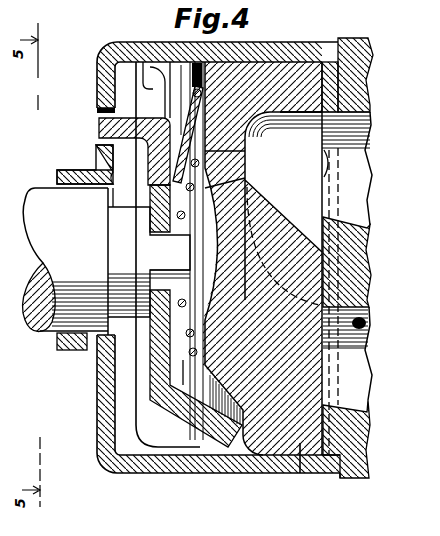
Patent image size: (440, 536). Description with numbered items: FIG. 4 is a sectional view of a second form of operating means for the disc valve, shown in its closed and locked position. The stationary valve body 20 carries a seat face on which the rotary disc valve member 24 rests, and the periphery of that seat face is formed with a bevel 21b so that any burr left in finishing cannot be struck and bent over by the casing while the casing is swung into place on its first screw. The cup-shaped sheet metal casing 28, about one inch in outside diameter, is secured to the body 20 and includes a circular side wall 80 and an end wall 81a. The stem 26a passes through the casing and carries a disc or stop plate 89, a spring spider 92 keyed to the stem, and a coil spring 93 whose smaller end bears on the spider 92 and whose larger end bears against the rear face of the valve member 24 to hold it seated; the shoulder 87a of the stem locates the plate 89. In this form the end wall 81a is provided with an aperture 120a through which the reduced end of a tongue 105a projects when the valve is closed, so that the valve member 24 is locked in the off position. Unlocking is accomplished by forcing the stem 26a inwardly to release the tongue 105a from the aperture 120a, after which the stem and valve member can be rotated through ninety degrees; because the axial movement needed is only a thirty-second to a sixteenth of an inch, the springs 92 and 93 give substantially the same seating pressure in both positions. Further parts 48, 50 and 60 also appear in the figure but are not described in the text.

The valve body 20 is at (362, 80).
The bevel 21b is at (326, 62).
The rotary disc valve member 24 is at (300, 477).
The stem 26a is at (92, 352).
The casing 28 is at (170, 480).
The lower seal ring 48 is at (369, 325).
The upper seal ring 50 is at (372, 132).
The cavity 60 is at (262, 258).
The circular side wall 80 is at (222, 474).
The end wall 81a is at (96, 407).
The stepped shaft 87a is at (153, 247).
The stop plate 89 is at (140, 178).
The spring spider 92 is at (245, 155).
The coil spring 93 is at (245, 178).
The tongue 105a is at (98, 128).
The aperture 120a is at (97, 110).